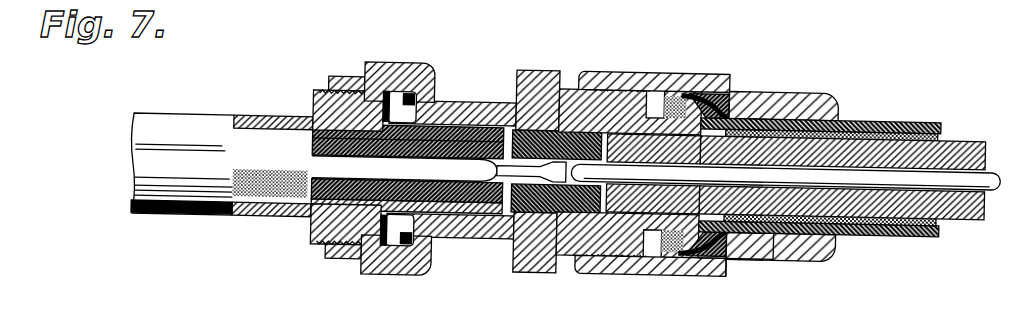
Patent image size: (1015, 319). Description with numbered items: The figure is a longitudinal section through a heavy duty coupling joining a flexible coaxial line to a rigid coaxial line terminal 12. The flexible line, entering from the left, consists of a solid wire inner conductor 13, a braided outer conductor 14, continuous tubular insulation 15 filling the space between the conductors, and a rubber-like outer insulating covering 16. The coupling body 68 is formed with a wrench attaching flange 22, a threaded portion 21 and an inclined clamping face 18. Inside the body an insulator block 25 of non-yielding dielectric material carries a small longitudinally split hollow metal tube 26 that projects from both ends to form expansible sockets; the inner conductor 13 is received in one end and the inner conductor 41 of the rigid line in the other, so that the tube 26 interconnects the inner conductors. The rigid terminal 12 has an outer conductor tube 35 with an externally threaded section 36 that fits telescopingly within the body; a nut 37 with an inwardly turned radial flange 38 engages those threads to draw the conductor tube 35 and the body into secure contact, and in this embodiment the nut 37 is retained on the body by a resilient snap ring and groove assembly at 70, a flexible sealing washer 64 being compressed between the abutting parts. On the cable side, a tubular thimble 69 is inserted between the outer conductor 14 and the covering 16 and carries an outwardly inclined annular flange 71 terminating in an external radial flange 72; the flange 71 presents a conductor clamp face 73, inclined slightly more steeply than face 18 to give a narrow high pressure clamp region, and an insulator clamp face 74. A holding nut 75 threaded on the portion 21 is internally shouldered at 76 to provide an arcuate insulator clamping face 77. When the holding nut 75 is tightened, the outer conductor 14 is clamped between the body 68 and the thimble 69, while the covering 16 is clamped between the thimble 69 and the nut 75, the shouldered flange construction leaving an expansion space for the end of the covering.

The rigid coaxial line terminal 12 is at (283, 113).
The inner conductor 13 is at (998, 192).
The outer conductor 14 is at (910, 133).
The tubular insulation 15 is at (966, 142).
The outer insulating covering 16 is at (862, 126).
The inclined clamping face 18 is at (736, 151).
The threaded portion 21 is at (580, 75).
The wrench attaching flange 22 is at (522, 72).
The insulator block 25 is at (520, 128).
The hollow metal tube 26 is at (633, 207).
The outer conductor tube 35 is at (462, 103).
The externally threaded section 36 is at (314, 90).
The nut 37 is at (393, 64).
The inwardly turned radial flange 38 is at (414, 104).
The inner conductor of the rigid line 41 is at (303, 214).
The flexible sealing washer 64 is at (358, 55).
The body 68 is at (562, 90).
The tubular thimble 69 is at (793, 93).
The resilient snap ring and groove assembly 70 is at (405, 92).
The outwardly inclined annular flange 71 is at (714, 97).
The external annular radial flange 72 is at (688, 100).
The conductor clamp face 73 is at (653, 174).
The insulator clamp face 74 is at (733, 95).
The holding nut 75 is at (653, 96).
The internal shoulder 76 is at (700, 266).
The arcuate insulator clamping face 77 is at (728, 240).